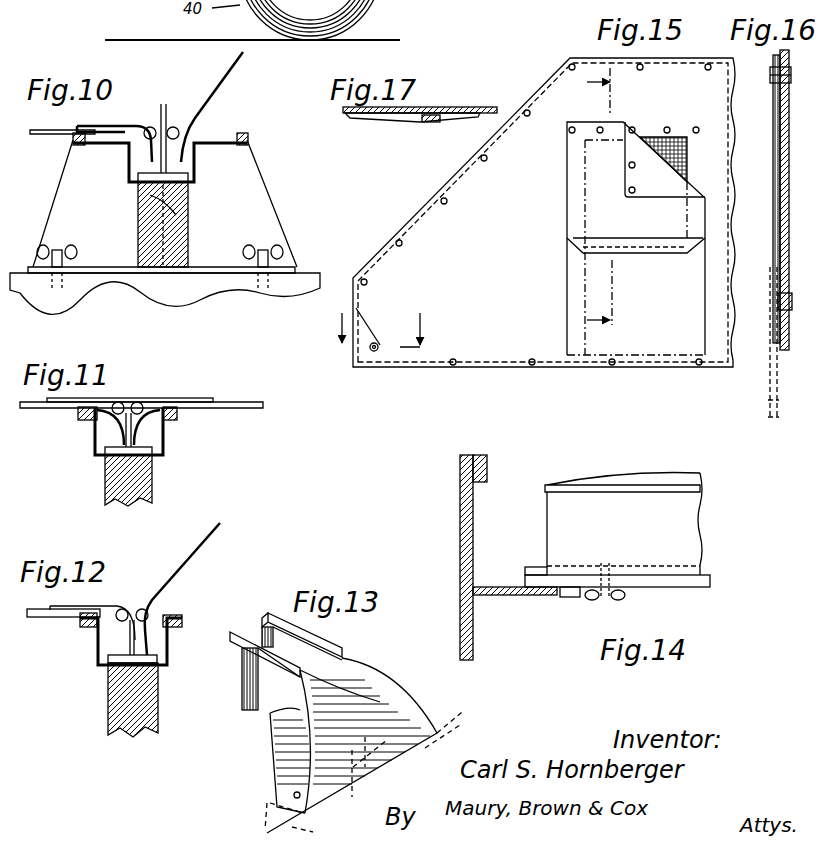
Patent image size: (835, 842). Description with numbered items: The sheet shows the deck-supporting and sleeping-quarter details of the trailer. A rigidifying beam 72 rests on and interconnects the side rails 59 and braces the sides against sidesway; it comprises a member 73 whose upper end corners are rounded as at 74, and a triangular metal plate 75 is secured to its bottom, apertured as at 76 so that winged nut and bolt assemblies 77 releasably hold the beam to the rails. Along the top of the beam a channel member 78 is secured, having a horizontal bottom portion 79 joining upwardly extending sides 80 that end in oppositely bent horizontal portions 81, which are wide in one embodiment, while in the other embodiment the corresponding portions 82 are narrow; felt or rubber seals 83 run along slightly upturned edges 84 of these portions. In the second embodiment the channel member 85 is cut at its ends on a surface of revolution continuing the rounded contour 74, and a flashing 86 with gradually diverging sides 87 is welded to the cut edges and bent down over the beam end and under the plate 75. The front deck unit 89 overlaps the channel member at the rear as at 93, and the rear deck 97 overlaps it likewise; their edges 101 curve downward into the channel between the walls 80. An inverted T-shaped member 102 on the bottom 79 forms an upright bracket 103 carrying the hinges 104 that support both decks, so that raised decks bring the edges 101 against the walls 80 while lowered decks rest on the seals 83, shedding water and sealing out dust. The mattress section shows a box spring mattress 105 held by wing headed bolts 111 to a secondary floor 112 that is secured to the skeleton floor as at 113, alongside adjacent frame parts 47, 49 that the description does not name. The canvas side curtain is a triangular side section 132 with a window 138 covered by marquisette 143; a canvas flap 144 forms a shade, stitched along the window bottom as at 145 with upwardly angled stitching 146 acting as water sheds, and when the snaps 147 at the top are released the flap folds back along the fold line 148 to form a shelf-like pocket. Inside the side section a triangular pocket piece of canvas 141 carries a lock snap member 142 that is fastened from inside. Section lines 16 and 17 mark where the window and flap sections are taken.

In FIG. 14, the upright bracket 47 is at (460, 540).
In FIG. 14, the shelf 49 is at (505, 596).
In FIG. 13, the side rails 59 is at (300, 833).
In FIG. 14, the side rails 59 is at (488, 465).
In FIG. 10, the rigidifying beam 72 is at (136, 227).
In FIG. 12, the rigidifying beam 72 is at (108, 740).
In FIG. 13, the rigidifying beam 72 is at (244, 709).
In FIG. 11, the beam member 73 is at (152, 492).
In FIG. 12, the beam member 73 is at (115, 718).
In FIG. 13, the beam member 73 is at (242, 700).
In FIG. 13, the rounded contour 74 is at (352, 797).
In FIG. 13, the triangular metal plate 75 is at (272, 748).
In FIG. 13, the aperture 76 is at (294, 795).
In FIG. 10, the winged nut and bolt assemblies 77 is at (55, 248).
In FIG. 10, the channel member 78 is at (206, 141).
In FIG. 10, the horizontal bottom portion 79 is at (138, 178).
In FIG. 11, the horizontal bottom portion 79 is at (105, 455).
In FIG. 10, the upwardly extending sides 80 is at (129, 174).
In FIG. 11, the upwardly extending sides 80 is at (163, 440).
In FIG. 10, the wide horizontal portions 81 is at (226, 146).
In FIG. 11, the narrow horizontal portions 82 is at (172, 424).
In FIG. 13, the narrow horizontal portions 82 is at (267, 625).
In FIG. 10, the felt or rubber seals 83 is at (247, 134).
In FIG. 11, the felt or rubber seals 83 is at (172, 408).
In FIG. 10, the upturned edges 84 is at (250, 141).
In FIG. 11, the upturned edges 84 is at (178, 414).
In FIG. 11, the channel member 85 is at (92, 437).
In FIG. 12, the channel member 85 is at (94, 654).
In FIG. 13, the channel member 85 is at (260, 673).
In FIG. 13, the flashing 86 is at (411, 697).
In FIG. 13, the diverging sides 87 is at (305, 722).
In FIG. 10, the deck unit 89 is at (241, 60).
In FIG. 11, the deck unit 89 is at (258, 402).
In FIG. 12, the deck unit 89 is at (211, 544).
In FIG. 10, the overlap 93 is at (148, 127).
In FIG. 10, the rear deck 97 is at (48, 135).
In FIG. 11, the rear deck 97 is at (50, 408).
In FIG. 12, the rear deck 97 is at (48, 612).
In FIG. 11, the deck edges 101 is at (119, 402).
In FIG. 10, the inverted T-shaped member 102 is at (177, 216).
In FIG. 10, the upright bracket 103 is at (162, 125).
In FIG. 10, the hinges 104 is at (168, 125).
In FIG. 14, the box spring mattress 105 is at (711, 505).
In FIG. 14, the wing headed bolts 111 is at (623, 600).
In FIG. 14, the secondary floor 112 is at (697, 588).
In FIG. 14, the securing point 113 is at (567, 598).
In FIG. 17, the triangular side sections 132 is at (455, 100).
In FIG. 15, the triangular side sections 132 is at (490, 340).
In FIG. 15, the windows 138 is at (651, 139).
In FIG. 17, the pocket piece of canvas 141 is at (395, 121).
In FIG. 15, the pocket piece of canvas 141 is at (360, 335).
In FIG. 17, the lock snap member 142 is at (430, 124).
In FIG. 15, the lock snap member 142 is at (377, 343).
In FIG. 15, the marquisette 143 is at (680, 161).
In FIG. 16, the marquisette 143 is at (778, 200).
In FIG. 15, the canvas flap 144 is at (575, 190).
In FIG. 16, the canvas flap 144 is at (781, 162).
In FIG. 15, the bottom stitching 145 is at (651, 258).
In FIG. 16, the bottom stitching 145 is at (779, 300).
In FIG. 15, the inclined stitching 146 is at (567, 250).
In FIG. 15, the bolt 147 is at (772, 73).
In FIG. 16, the bolt 147 is at (780, 75).
In FIG. 15, the fold line 148 is at (605, 248).
In FIG. 16, the fold line 148 is at (775, 270).
In FIG. 15, the section line 16— 16 is at (611, 199).
In FIG. 15, the section line 17— 17 is at (379, 330).